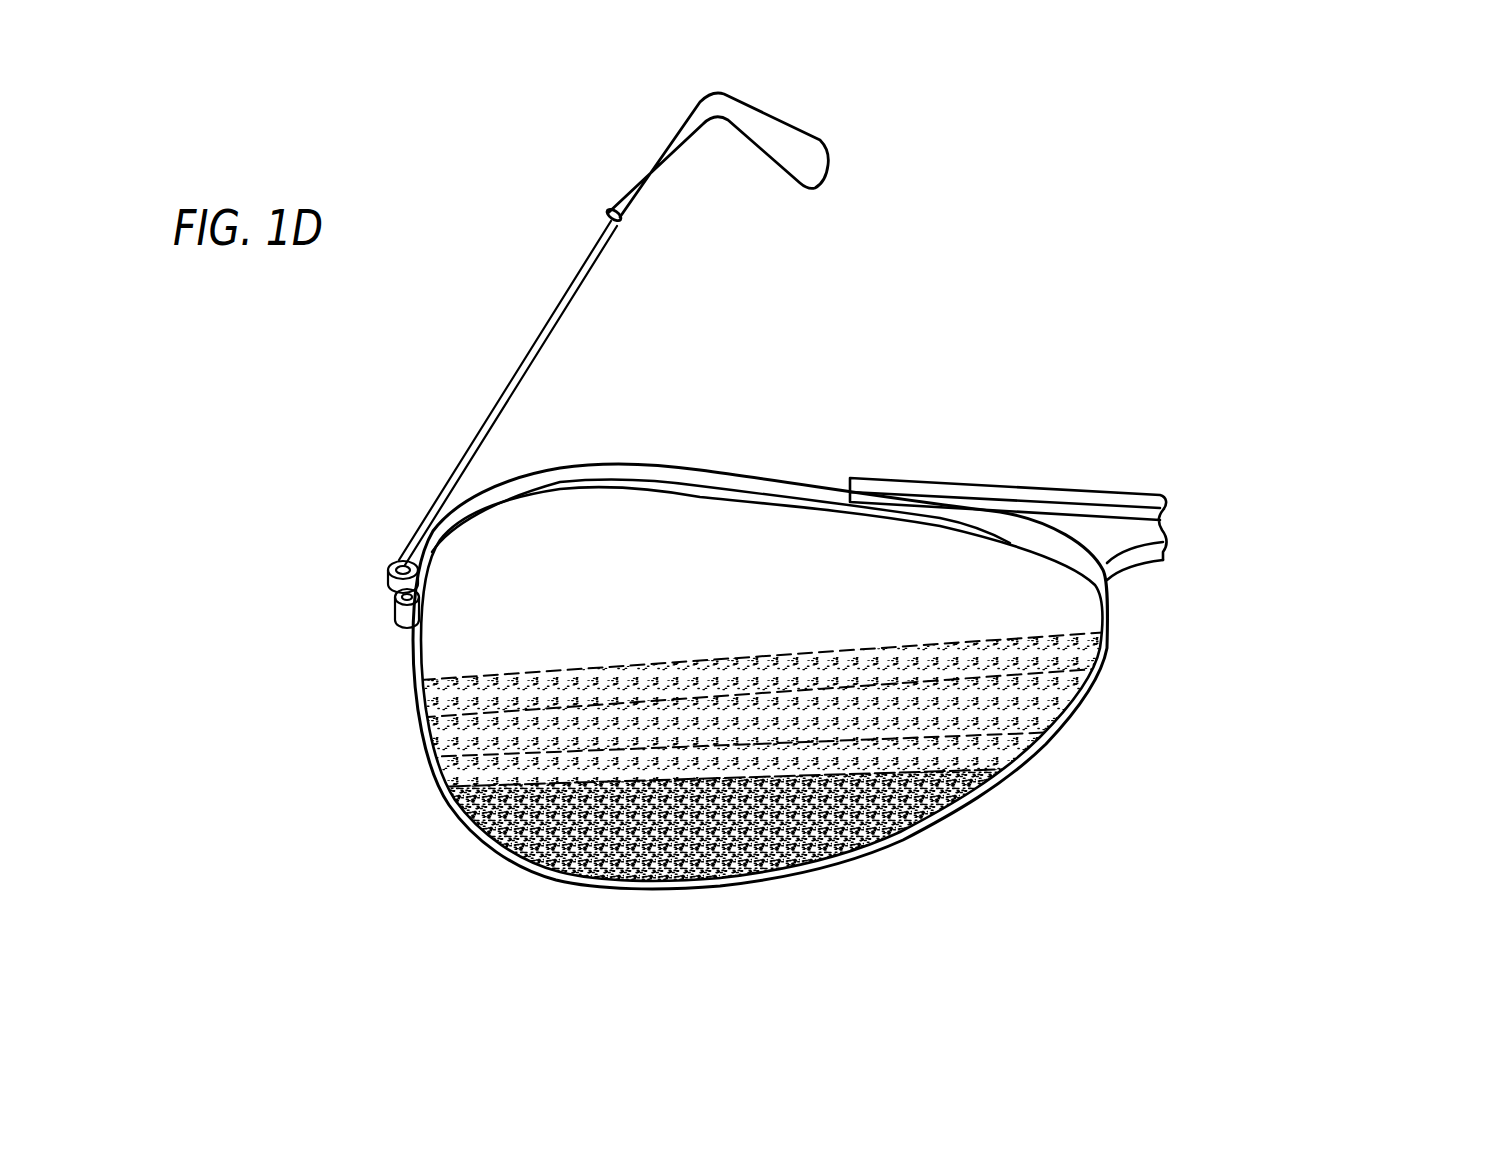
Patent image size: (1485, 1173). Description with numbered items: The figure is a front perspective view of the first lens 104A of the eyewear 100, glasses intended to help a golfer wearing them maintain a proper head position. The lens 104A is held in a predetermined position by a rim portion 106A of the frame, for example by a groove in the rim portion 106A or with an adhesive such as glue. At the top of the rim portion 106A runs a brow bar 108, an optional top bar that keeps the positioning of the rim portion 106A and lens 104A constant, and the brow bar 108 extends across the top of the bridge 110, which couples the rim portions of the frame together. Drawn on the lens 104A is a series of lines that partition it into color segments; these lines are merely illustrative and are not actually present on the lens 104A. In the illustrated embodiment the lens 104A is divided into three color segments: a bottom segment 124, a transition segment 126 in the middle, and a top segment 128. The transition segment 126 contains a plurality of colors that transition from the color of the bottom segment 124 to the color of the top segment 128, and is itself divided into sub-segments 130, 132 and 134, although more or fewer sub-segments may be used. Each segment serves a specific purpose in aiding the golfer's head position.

The eyewear 100 is at (336, 411).
The lens 104A is at (745, 448).
The rim portion 106A is at (907, 830).
The brow bar 108 is at (1097, 488).
The bridge 110 is at (1137, 567).
The bottom segment 124 is at (450, 853).
The transition segment 126 is at (403, 670).
The top segment 128 is at (400, 638).
The sub-segment 130 is at (1040, 757).
The sub-segment 132 is at (1083, 704).
The sub-segment 134 is at (1112, 649).